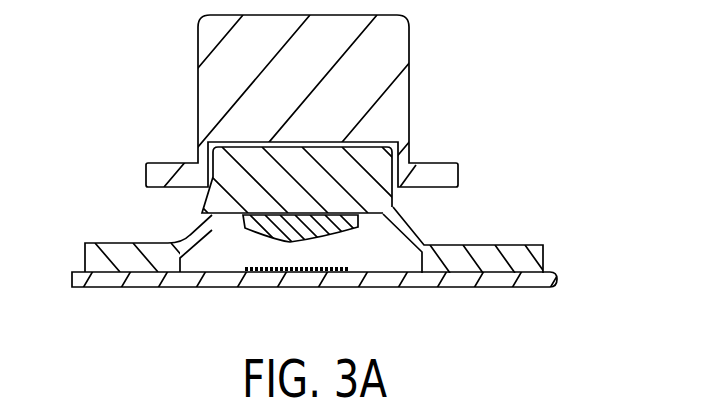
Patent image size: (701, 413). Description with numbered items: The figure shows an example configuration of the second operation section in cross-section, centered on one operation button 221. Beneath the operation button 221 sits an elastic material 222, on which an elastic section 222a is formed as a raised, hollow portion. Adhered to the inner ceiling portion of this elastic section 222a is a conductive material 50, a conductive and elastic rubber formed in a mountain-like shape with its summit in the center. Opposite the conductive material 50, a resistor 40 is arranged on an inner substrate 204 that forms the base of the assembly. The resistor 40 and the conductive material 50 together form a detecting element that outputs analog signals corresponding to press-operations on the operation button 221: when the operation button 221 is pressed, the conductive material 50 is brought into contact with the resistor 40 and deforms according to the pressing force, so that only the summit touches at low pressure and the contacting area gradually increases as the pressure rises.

The operation button 221 is at (410, 42).
The elastic material 222 is at (475, 244).
The elastic section 222a is at (192, 233).
The conductive material 50 is at (250, 237).
The resistor 40 is at (346, 270).
The inner substrate 204 is at (500, 288).